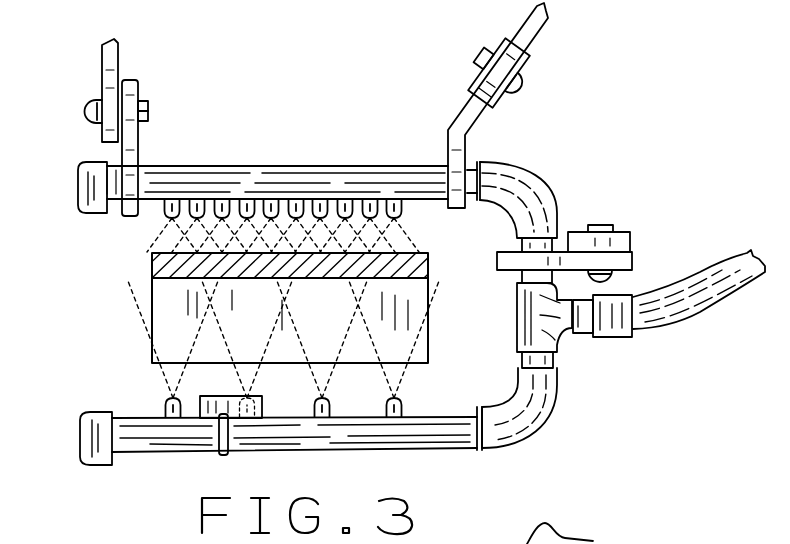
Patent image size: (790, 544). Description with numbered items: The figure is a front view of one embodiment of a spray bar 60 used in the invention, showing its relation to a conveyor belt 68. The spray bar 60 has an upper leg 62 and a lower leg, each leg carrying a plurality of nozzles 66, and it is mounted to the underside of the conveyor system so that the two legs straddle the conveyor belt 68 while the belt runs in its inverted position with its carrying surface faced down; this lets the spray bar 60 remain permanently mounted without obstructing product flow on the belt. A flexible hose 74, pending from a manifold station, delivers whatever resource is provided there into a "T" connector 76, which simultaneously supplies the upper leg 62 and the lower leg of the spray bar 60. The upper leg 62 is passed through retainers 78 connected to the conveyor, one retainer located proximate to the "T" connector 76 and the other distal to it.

The spray bar 60 is at (651, 88).
The upper leg 62 is at (210, 166).
The nozzles 66 is at (247, 218).
The conveyor belt 68 is at (150, 270).
The flexible hose 74 is at (700, 312).
The "T" connector 76 is at (563, 338).
The retainers 78 is at (138, 88).